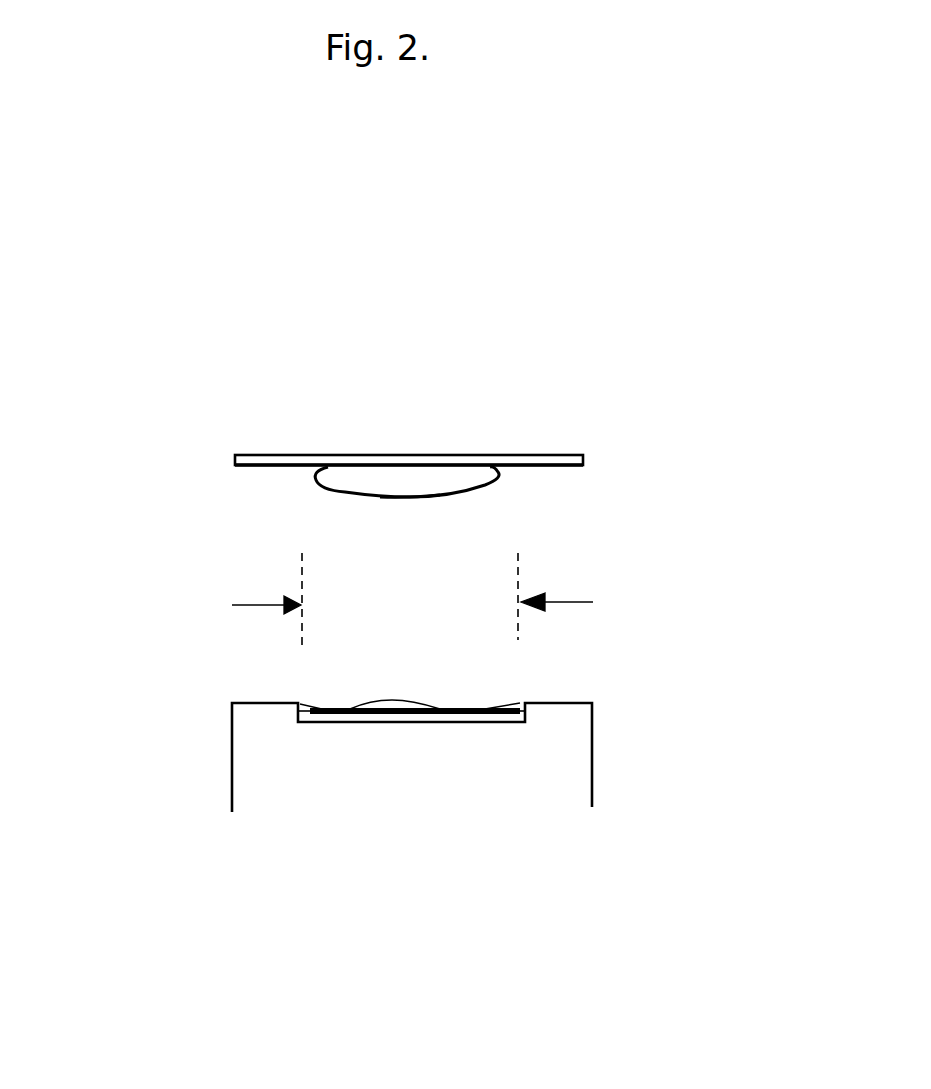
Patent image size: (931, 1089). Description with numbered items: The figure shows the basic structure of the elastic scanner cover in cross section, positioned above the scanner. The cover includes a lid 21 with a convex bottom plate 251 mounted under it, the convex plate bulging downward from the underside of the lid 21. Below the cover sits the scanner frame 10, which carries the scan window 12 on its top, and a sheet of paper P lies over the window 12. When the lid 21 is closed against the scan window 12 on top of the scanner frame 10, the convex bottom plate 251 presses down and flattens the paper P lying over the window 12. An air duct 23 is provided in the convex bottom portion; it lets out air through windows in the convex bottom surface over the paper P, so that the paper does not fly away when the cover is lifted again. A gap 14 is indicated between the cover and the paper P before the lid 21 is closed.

The base / holder 10 is at (592, 797).
The substrate 12 is at (312, 722).
The gap between substrate and mold 14 is at (587, 607).
The mold plate 21 is at (397, 457).
The lens-shaped mold portion 23 is at (463, 475).
The molding surface 251 is at (590, 534).
The resin material P is at (289, 686).